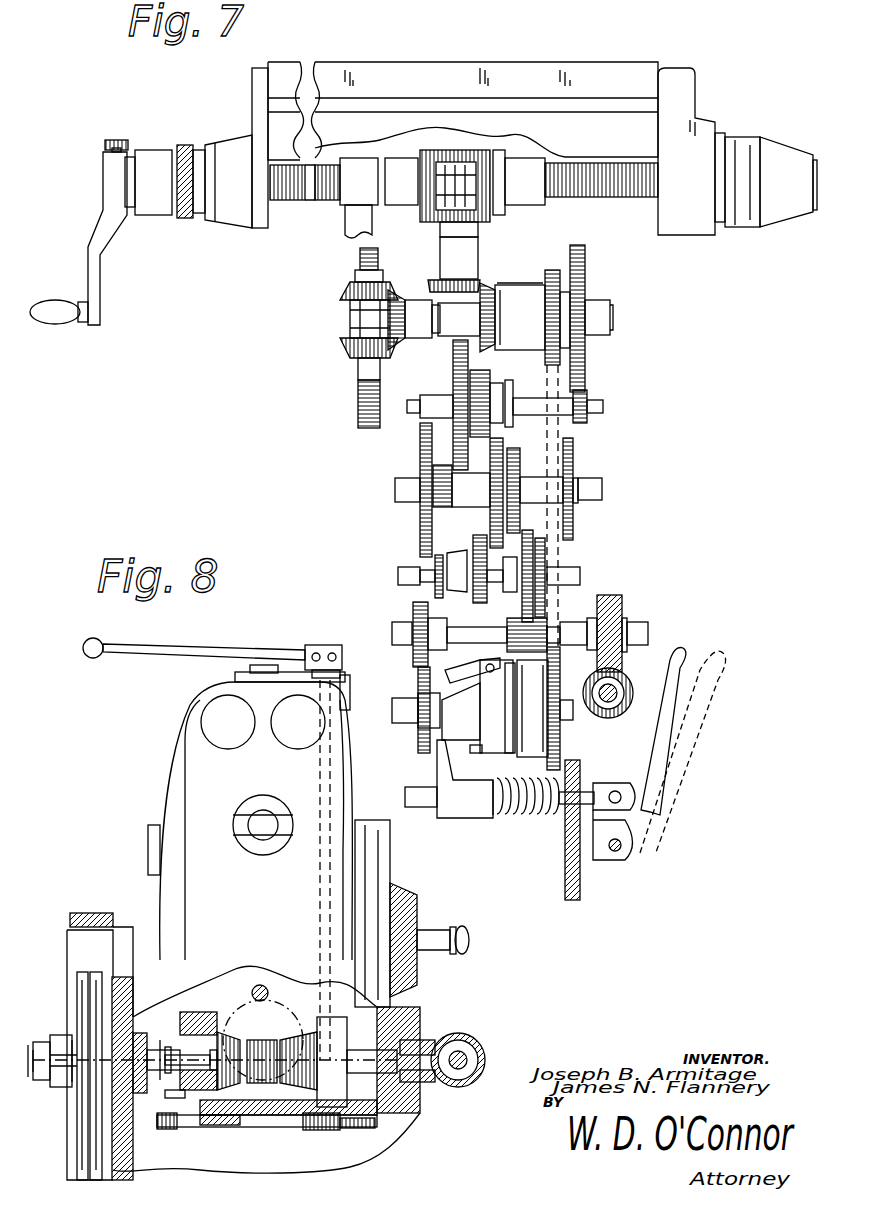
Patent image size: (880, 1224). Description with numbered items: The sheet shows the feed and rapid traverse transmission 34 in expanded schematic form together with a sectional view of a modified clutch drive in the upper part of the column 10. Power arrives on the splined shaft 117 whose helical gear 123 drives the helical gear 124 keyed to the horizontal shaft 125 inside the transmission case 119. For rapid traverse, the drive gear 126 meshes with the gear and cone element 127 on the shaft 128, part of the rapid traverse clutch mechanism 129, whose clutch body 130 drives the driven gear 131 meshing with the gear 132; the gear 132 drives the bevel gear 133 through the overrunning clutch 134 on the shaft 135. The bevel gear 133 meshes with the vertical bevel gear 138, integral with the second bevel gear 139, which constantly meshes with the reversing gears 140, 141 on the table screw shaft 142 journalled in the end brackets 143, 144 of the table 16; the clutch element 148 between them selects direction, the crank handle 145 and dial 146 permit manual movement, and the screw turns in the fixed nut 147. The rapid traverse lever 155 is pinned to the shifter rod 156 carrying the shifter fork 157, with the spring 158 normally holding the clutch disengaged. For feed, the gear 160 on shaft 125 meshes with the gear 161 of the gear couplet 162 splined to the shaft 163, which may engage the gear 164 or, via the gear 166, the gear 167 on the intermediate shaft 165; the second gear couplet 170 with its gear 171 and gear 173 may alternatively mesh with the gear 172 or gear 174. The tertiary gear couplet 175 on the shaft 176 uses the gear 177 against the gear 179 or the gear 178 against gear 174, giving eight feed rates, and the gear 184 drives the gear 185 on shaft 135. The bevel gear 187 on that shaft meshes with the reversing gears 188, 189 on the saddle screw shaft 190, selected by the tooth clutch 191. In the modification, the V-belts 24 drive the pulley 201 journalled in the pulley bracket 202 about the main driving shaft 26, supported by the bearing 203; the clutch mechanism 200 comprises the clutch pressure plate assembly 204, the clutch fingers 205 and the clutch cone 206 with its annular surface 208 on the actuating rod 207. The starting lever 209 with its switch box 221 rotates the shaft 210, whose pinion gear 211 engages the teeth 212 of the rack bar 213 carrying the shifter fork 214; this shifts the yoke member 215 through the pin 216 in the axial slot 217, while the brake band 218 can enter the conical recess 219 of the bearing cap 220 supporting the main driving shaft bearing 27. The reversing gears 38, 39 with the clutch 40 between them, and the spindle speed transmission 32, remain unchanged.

In FIG. 8, the column 10 is at (165, 798).
In FIG. 7, the table 16 is at (472, 72).
In FIG. 8, the V-belts 24 is at (90, 975).
In FIG. 8, the main driving shaft 26 is at (214, 1073).
In FIG. 8, the main driving shaft bearing 27 is at (200, 1085).
In FIG. 8, the spindle speed transmission 32 is at (262, 1134).
In FIG. 7, the feed transmission 34 is at (651, 432).
In FIG. 8, the reversing gear 38 is at (222, 1032).
In FIG. 8, the reversing gear 39 is at (312, 1032).
In FIG. 8, the clutch 40 is at (262, 1040).
In FIG. 7, the splined shaft 117 is at (608, 702).
In FIG. 7, the transmission case 119 is at (565, 876).
In FIG. 7, the helical gear 123 is at (625, 678).
In FIG. 7, the helical gear 124 is at (618, 595).
In FIG. 7, the shaft 125 is at (648, 622).
In FIG. 7, the drive gear 126 is at (413, 658).
In FIG. 7, the gear and cone element 127 is at (418, 686).
In FIG. 7, the shaft 128 is at (400, 720).
In FIG. 7, the rapid traverse clutch mechanism 129 is at (465, 672).
In FIG. 7, the clutch drum 130 is at (520, 762).
In FIG. 7, the driven gear 131 is at (560, 672).
In FIG. 7, the gear 132 is at (555, 268).
In FIG. 7, the bevel gear 133 is at (498, 284).
In FIG. 7, the overrunning clutch 134 is at (545, 280).
In FIG. 7, the shaft 135 is at (608, 300).
In FIG. 7, the bevel gear 138 is at (488, 282).
In FIG. 7, the second bevel gear 139 is at (454, 257).
In FIG. 7, the reversing gear 140 is at (440, 132).
In FIG. 7, the reversing gear 141 is at (508, 160).
In FIG. 7, the table screw shaft 142 is at (600, 197).
In FIG. 7, the end bracket 143 is at (252, 88).
In FIG. 7, the end bracket 144 is at (690, 90).
In FIG. 7, the crank handle 145 is at (100, 245).
In FIG. 7, the dial 146 is at (210, 225).
In FIG. 7, the nut 147 is at (345, 208).
In FIG. 7, the clutch element 148 is at (462, 158).
In FIG. 7, the rapid traverse lever 155 is at (640, 745).
In FIG. 7, the shifter rod 156 is at (430, 805).
In FIG. 7, the shifter fork 157 is at (437, 772).
In FIG. 7, the spring 158 is at (515, 815).
In FIG. 7, the gear 160 is at (506, 636).
In FIG. 7, the gear 161 is at (525, 605).
In FIG. 7, the gear couplet 162 is at (570, 553).
In FIG. 7, the shaft 163 is at (580, 576).
In FIG. 7, the gear 164 is at (518, 460).
In FIG. 7, the intermediate shaft 165 is at (603, 490).
In FIG. 7, the gear 166 is at (547, 598).
In FIG. 7, the gear 167 is at (578, 458).
In FIG. 7, the second gear couplet 170 is at (462, 549).
In FIG. 7, the gear 171 is at (435, 592).
In FIG. 7, the gear 172 is at (420, 468).
In FIG. 7, the gear 173 is at (475, 598).
In FIG. 7, the gear 174 is at (503, 440).
In FIG. 7, the tertiary gear couplet 175 is at (445, 383).
In FIG. 7, the shaft 176 is at (598, 402).
In FIG. 7, the gear 177 is at (452, 386).
In FIG. 7, the gear 178 is at (478, 372).
In FIG. 7, the gear 179 is at (445, 512).
In FIG. 7, the gear 184 is at (585, 390).
In FIG. 7, the gear 185 is at (585, 262).
In FIG. 7, the bevel gear 187 is at (400, 290).
In FIG. 7, the reversing gear 188 is at (340, 345).
In FIG. 7, the reversing gear 189 is at (342, 292).
In FIG. 7, the saddle screw shaft 190 is at (358, 394).
In FIG. 7, the tooth clutch 191 is at (350, 318).
In FIG. 8, the clutch mechanism 200 is at (67, 1140).
In FIG. 8, the pulley 201 is at (120, 1147).
In FIG. 8, the pulley bracket 202 is at (133, 1030).
In FIG. 8, the bearing 203 is at (103, 972).
In FIG. 8, the clutch pressure plate assembly 204 is at (68, 1035).
In FIG. 8, the clutch fingers 205 is at (35, 1042).
In FIG. 8, the clutch cone 206 is at (60, 1088).
In FIG. 8, the actuating rod 207 is at (70, 1090).
In FIG. 8, the annular surface 208 is at (33, 1082).
In FIG. 8, the starting lever 209 is at (232, 648).
In FIG. 8, the shaft 210 is at (318, 910).
In FIG. 8, the pinion gear 211 is at (335, 1130).
In FIG. 8, the teeth 212 is at (292, 1152).
In FIG. 8, the rack bar 213 is at (243, 1150).
In FIG. 8, the shifter fork 214 is at (170, 1150).
In FIG. 8, the yoke member 215 is at (192, 1012).
In FIG. 8, the pin 216 is at (165, 1080).
In FIG. 8, the axial slot 217 is at (187, 1061).
In FIG. 8, the brake band 218 is at (168, 1075).
In FIG. 8, the conical recess 219 is at (197, 985).
In FIG. 8, the bearing cap 220 is at (178, 1098).
In FIG. 8, the switch box 221 is at (338, 628).